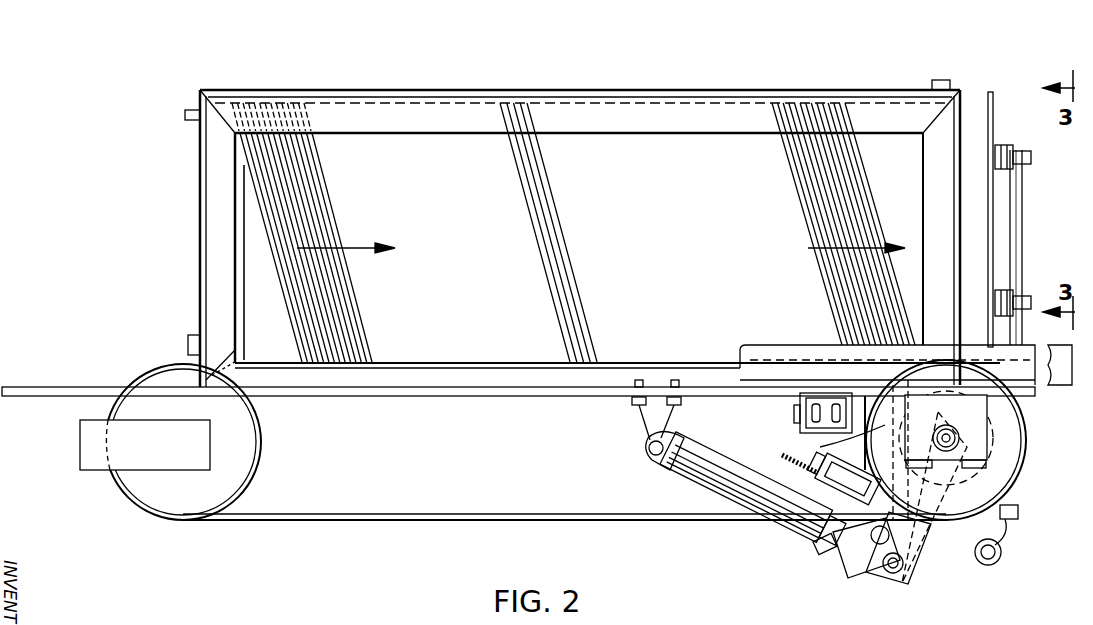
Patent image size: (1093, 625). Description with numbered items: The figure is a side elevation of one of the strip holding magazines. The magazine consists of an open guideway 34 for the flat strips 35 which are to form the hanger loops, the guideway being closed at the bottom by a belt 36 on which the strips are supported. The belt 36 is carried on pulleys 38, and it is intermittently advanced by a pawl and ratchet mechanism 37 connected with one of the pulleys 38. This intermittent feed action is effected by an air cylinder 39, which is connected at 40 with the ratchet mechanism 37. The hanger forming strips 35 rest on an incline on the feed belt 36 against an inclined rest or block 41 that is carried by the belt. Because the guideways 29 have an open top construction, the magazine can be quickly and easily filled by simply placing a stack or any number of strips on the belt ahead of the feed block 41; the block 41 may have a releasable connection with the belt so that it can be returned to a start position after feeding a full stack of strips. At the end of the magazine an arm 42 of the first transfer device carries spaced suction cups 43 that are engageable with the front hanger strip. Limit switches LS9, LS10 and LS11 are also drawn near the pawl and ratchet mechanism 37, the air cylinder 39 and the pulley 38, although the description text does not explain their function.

The guideway 29 is at (480, 84).
The open guideway 34 is at (683, 97).
The flat strips 35 is at (991, 90).
The belt 36 is at (437, 363).
The pawl and ratchet mechanism 37 is at (800, 444).
The pulleys 38 is at (247, 478).
The air cylinder 39 is at (682, 488).
The connection 40 is at (860, 560).
The inclined rest or block 41 is at (253, 290).
The arm 42 is at (1023, 232).
The suction cups 43 is at (999, 146).
The limit switch LS9 is at (798, 413).
The limit switch LS10 is at (1024, 535).
The limit switch LS11 is at (825, 477).